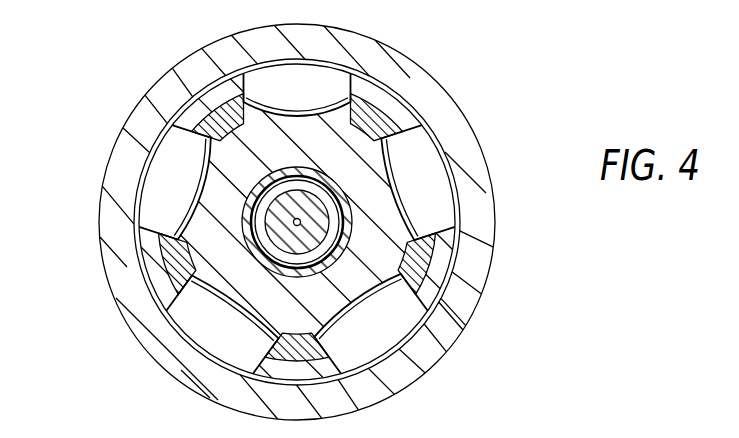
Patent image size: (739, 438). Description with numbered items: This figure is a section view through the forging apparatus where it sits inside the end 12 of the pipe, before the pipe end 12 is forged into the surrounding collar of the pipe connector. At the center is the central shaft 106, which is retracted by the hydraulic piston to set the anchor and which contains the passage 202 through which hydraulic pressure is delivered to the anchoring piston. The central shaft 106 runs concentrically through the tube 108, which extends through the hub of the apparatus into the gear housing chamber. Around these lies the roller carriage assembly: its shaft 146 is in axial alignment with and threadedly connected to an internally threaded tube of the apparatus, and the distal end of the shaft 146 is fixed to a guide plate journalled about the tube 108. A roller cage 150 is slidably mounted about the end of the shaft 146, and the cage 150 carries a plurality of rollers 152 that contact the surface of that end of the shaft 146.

The pipe end 12 is at (417, 78).
The central shaft 106 is at (203, 112).
The tube 108 is at (250, 205).
The shaft 146 is at (212, 258).
The roller cage 150 is at (481, 314).
The rollers 152 is at (440, 152).
The passage 202 is at (300, 218).